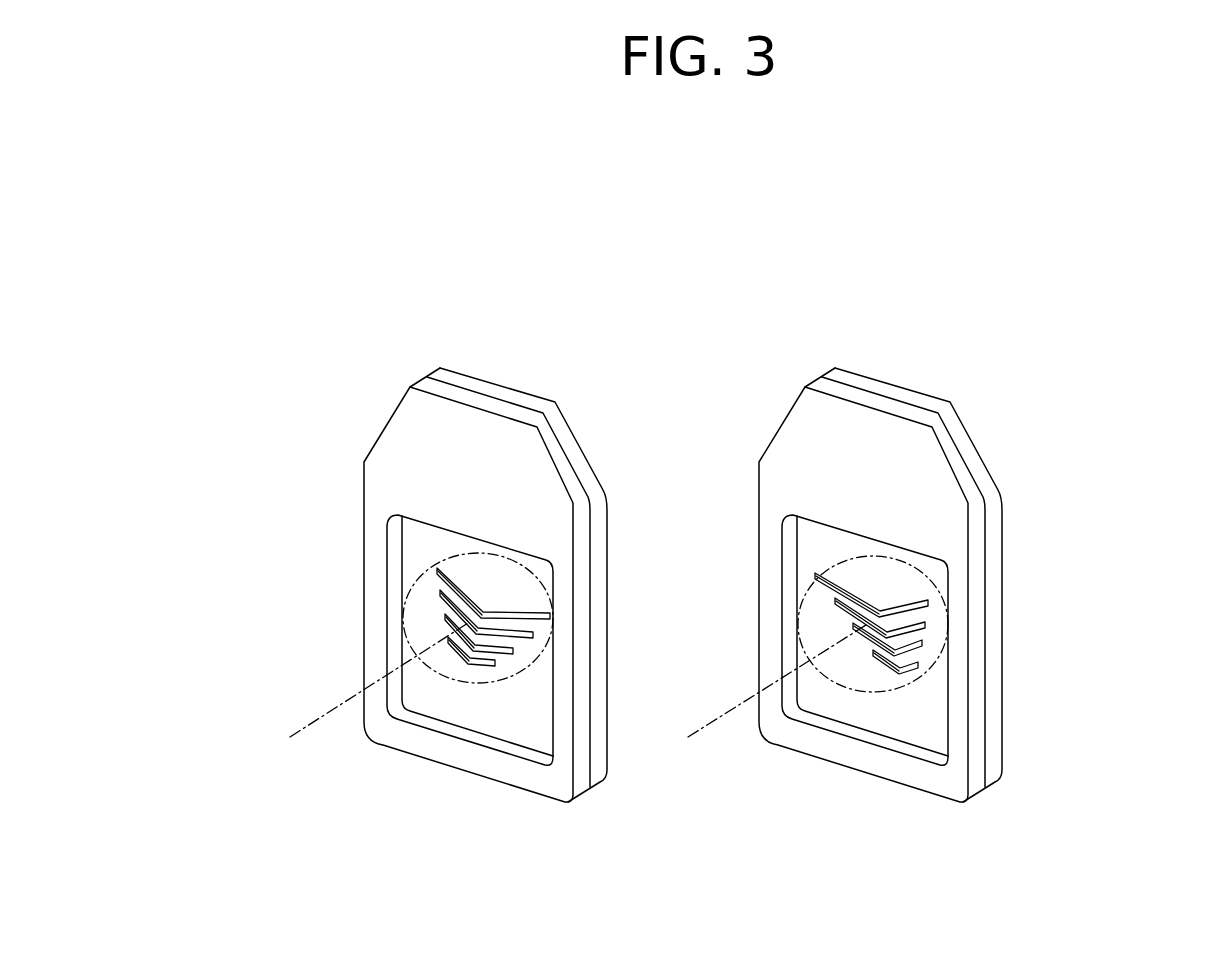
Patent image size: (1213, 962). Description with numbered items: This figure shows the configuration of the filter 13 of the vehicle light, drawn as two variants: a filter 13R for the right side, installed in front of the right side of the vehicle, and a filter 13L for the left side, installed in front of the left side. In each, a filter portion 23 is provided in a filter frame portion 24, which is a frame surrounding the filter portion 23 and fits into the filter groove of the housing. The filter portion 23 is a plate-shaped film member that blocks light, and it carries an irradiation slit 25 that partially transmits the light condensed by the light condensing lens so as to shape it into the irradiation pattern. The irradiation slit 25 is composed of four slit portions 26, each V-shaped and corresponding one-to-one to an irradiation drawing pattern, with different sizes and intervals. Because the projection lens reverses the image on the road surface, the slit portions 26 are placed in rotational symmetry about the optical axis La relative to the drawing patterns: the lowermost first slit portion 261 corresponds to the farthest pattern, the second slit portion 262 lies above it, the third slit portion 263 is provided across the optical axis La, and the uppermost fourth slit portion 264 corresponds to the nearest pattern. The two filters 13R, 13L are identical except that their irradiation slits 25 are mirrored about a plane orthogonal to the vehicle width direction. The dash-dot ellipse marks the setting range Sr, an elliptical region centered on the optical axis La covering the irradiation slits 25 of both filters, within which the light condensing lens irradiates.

The filter 13 is at (706, 522).
The filter for the right side 13R is at (517, 376).
The filter for the left side 13L is at (905, 376).
The filter frame portion 24 is at (412, 478).
The filter portion 23 is at (460, 700).
The irradiation slit 25 is at (686, 609).
The slit portion 26 is at (683, 611).
The first slit portion 261 is at (665, 668).
The second slit portion 262 is at (445, 614).
The third slit portion 263 is at (440, 592).
The fourth slit portion 264 is at (435, 570).
The setting range Sr is at (823, 560).
The optical axis La is at (312, 728).